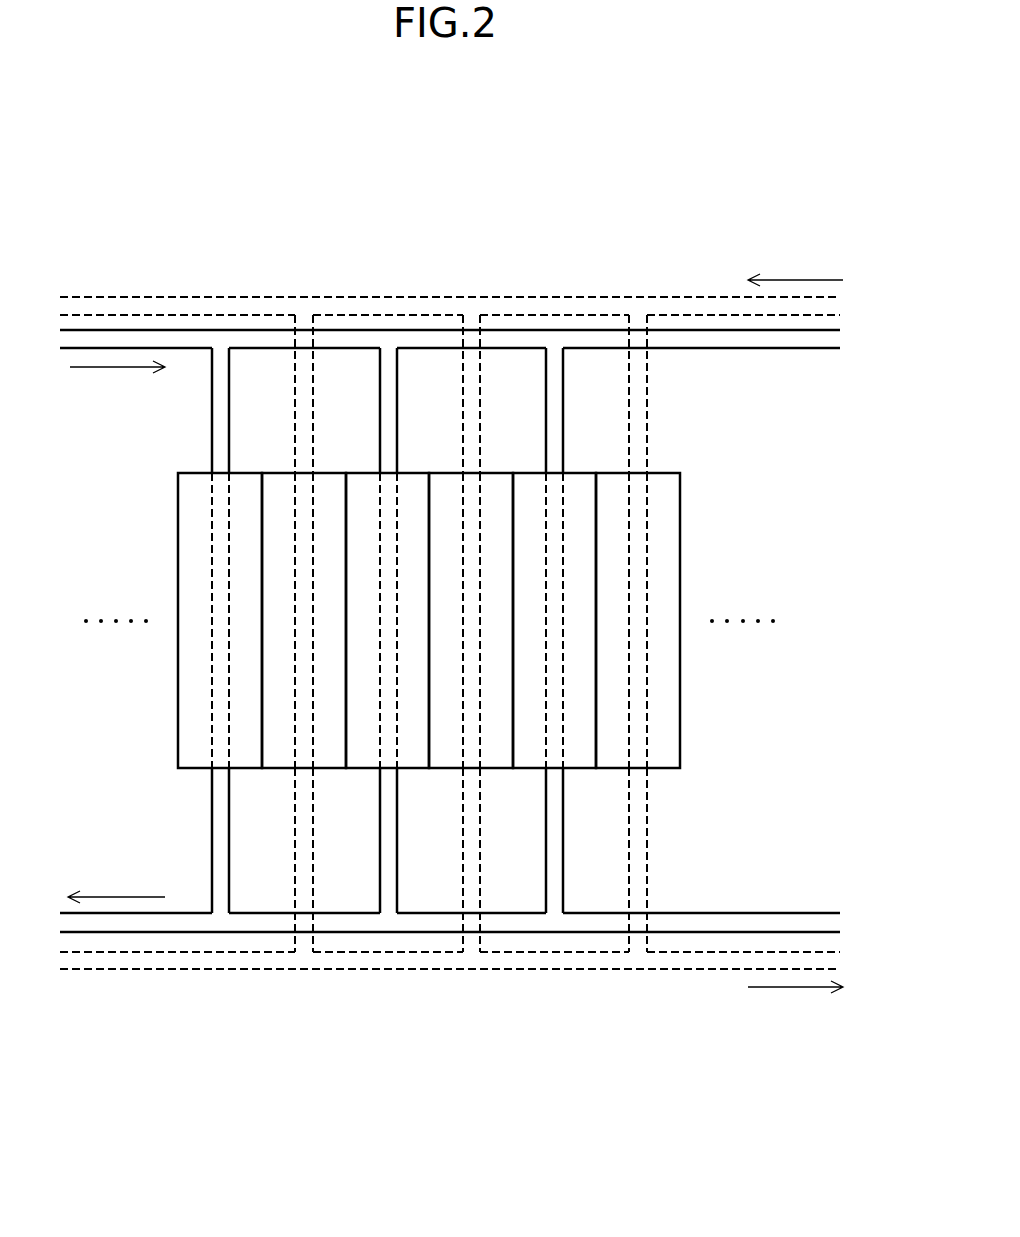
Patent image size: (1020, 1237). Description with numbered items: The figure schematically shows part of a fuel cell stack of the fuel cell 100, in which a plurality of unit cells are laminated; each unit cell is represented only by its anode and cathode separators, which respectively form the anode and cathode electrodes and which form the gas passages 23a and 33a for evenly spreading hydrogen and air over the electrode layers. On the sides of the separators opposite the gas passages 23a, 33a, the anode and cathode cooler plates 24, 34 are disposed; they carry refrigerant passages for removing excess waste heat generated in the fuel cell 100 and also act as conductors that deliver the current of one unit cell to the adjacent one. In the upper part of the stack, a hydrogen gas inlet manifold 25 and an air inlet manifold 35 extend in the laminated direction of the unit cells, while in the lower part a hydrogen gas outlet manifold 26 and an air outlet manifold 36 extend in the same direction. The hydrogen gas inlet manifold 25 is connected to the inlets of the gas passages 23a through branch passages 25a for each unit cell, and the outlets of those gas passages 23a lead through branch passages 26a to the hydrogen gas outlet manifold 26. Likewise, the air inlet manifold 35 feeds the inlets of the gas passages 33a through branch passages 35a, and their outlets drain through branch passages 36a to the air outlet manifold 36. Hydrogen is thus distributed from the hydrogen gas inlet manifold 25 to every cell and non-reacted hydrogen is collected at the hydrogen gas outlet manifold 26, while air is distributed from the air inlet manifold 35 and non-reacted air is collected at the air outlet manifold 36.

The fuel cell 100 is at (704, 149).
The hydrogen gas inlet manifold 25 is at (165, 330).
The branch passages 25a is at (229, 397).
The air inlet manifold 35 is at (563, 297).
The branch passages 35a is at (313, 388).
The gas passages 23a is at (229, 508).
The gas passages 33a is at (313, 508).
The anode cooler plate 24 is at (187, 501).
The cathode cooler plate 34 is at (278, 540).
The hydrogen gas outlet manifold 26 is at (164, 933).
The branch passages 26a is at (229, 870).
The air outlet manifold 36 is at (565, 969).
The branch passages 36a is at (313, 876).